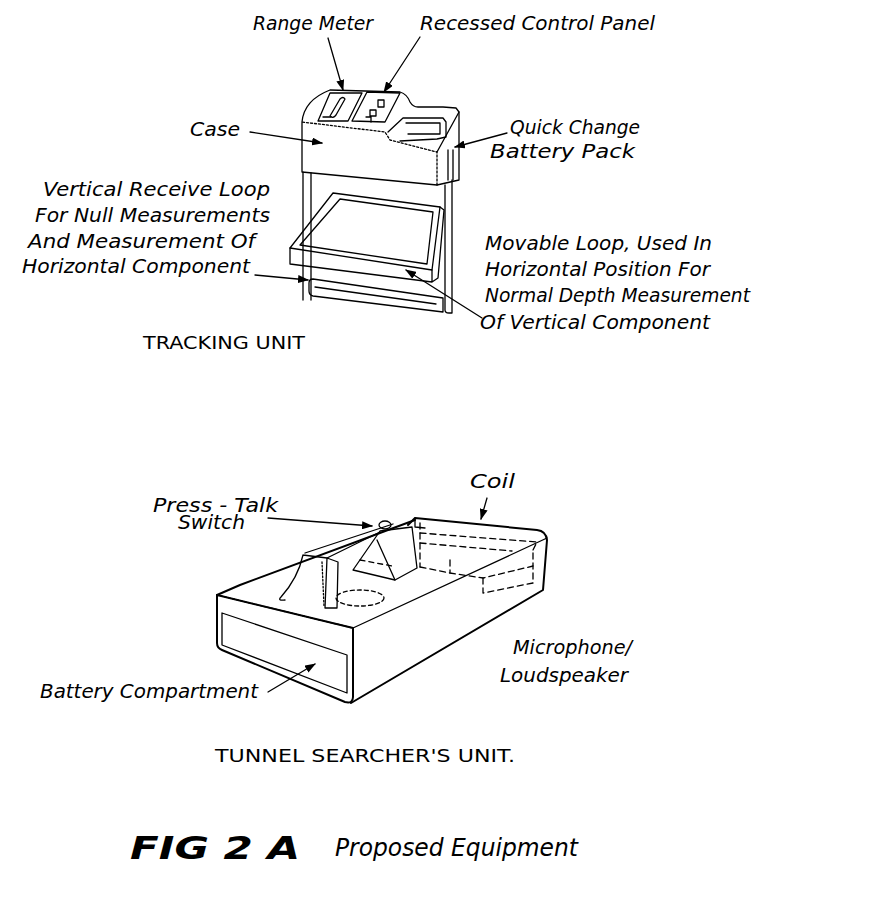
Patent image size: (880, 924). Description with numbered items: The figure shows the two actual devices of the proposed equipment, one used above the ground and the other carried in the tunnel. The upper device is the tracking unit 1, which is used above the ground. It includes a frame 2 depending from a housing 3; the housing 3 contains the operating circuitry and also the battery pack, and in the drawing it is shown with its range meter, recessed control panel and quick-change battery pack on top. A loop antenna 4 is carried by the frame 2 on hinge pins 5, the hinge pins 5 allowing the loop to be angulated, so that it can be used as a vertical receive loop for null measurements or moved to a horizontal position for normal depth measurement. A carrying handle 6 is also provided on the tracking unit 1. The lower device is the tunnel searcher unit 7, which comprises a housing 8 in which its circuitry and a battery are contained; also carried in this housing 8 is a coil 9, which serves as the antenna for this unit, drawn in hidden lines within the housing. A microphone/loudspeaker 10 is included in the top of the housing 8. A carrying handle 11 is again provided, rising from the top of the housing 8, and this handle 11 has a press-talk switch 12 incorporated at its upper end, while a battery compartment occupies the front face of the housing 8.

The tracking unit 1 is at (270, 160).
The frame 2 is at (456, 179).
The housing 3 is at (367, 168).
The loop antenna 4 is at (373, 272).
The hinge pins 5 is at (451, 243).
The carrying handle 6 is at (438, 116).
The tunnel searcher unit 7 is at (593, 540).
The housing 8 is at (528, 592).
The coil 9 is at (544, 565).
The microphone/loudspeaker 10 is at (368, 604).
The carrying handle 11 is at (319, 550).
The press-talk switch 12 is at (383, 521).